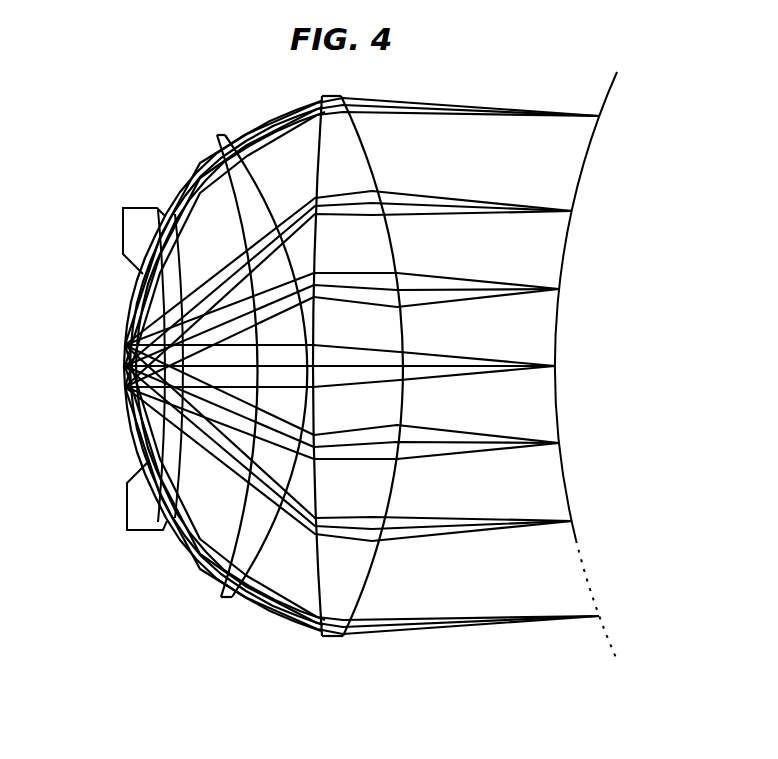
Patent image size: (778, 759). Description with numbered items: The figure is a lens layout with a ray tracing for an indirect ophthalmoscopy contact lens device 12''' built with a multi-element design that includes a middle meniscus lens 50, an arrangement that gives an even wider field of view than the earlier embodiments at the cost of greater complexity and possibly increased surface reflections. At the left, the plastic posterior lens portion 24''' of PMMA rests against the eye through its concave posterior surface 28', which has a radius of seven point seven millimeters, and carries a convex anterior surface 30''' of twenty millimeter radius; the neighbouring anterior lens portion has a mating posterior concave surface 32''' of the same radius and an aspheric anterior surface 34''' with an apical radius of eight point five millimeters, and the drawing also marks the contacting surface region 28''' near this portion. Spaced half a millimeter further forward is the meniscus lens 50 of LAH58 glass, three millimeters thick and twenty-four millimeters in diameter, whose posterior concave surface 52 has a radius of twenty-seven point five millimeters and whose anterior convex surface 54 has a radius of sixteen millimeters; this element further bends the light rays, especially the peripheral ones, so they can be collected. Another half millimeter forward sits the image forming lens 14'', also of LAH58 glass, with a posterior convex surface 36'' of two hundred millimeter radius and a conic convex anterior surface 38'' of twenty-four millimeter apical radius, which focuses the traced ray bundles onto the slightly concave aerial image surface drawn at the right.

The optical imaging system 12''' is at (185, 366).
The plastic posterior lens portion 24''' is at (105, 241).
The concave posterior surface 28' is at (189, 366).
The dome inner surface 28''' is at (220, 366).
The convex anterior surface 30''' is at (111, 496).
The posterior concave surface 32''' is at (116, 366).
The anterior surface 34''' is at (186, 409).
The middle meniscus lens 50 is at (238, 366).
The posterior concave surface 52 is at (228, 192).
The anterior convex surface 54 is at (250, 172).
The image forming lens 14'' is at (362, 391).
The posterior convex surface 36'' is at (310, 391).
The convex anterior surface 38'' is at (388, 391).